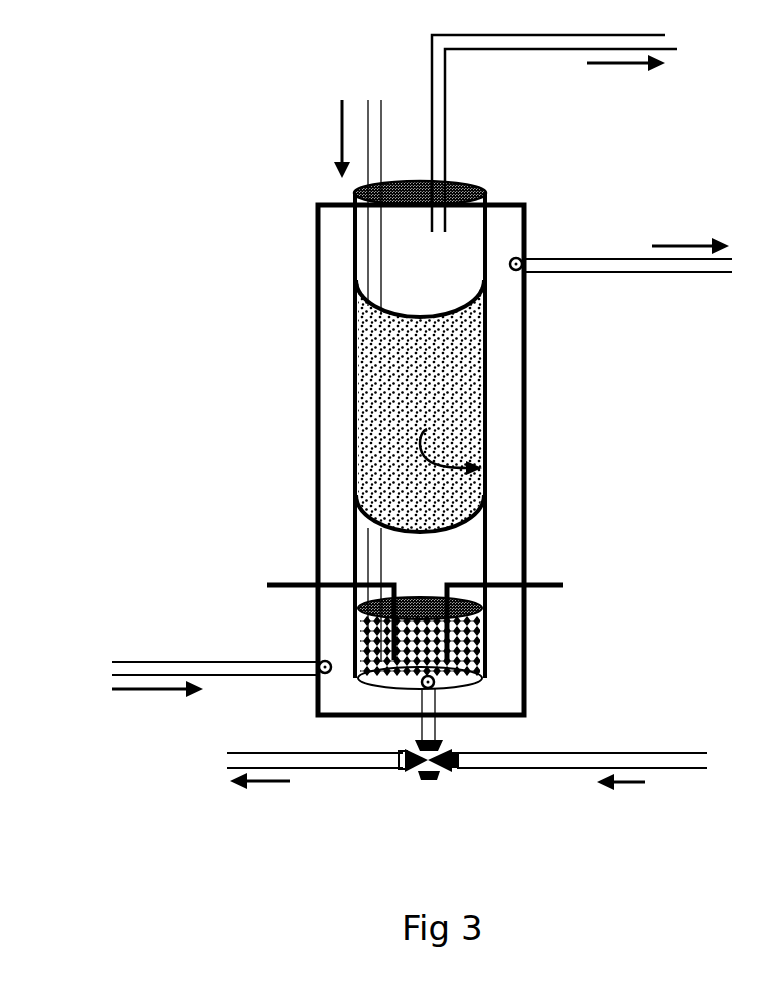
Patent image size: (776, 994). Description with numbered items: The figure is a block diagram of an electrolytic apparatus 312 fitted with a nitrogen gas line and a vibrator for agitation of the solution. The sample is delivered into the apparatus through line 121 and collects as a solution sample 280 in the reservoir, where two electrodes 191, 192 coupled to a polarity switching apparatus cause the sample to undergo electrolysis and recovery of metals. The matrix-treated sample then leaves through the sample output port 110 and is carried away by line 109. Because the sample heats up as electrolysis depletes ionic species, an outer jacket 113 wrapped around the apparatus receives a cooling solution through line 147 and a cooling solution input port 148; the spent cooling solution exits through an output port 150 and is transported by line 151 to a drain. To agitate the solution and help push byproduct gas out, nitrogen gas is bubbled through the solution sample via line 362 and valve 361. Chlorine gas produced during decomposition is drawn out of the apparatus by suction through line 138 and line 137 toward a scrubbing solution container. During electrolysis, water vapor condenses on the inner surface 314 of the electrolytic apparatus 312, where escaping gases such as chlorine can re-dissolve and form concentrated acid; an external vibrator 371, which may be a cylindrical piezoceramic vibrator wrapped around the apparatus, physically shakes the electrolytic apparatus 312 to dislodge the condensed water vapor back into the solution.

The line 109 is at (306, 770).
The sample output port 110 is at (487, 676).
The outer jacket 113 is at (317, 468).
The line 121 is at (368, 243).
The line 137 is at (497, 50).
The line 138 is at (445, 154).
The line 147 is at (202, 660).
The cooling solution input port 148 is at (317, 677).
The output port 150 is at (523, 258).
The line 151 is at (640, 273).
The electrode 191 is at (292, 582).
The electrode 192 is at (552, 582).
The solution sample 280 is at (487, 637).
The electrolytic apparatus 312 is at (487, 363).
The inner surface 314 is at (427, 429).
The valve 361 is at (428, 780).
The line 362 is at (579, 770).
The external vibrator 371 is at (368, 389).